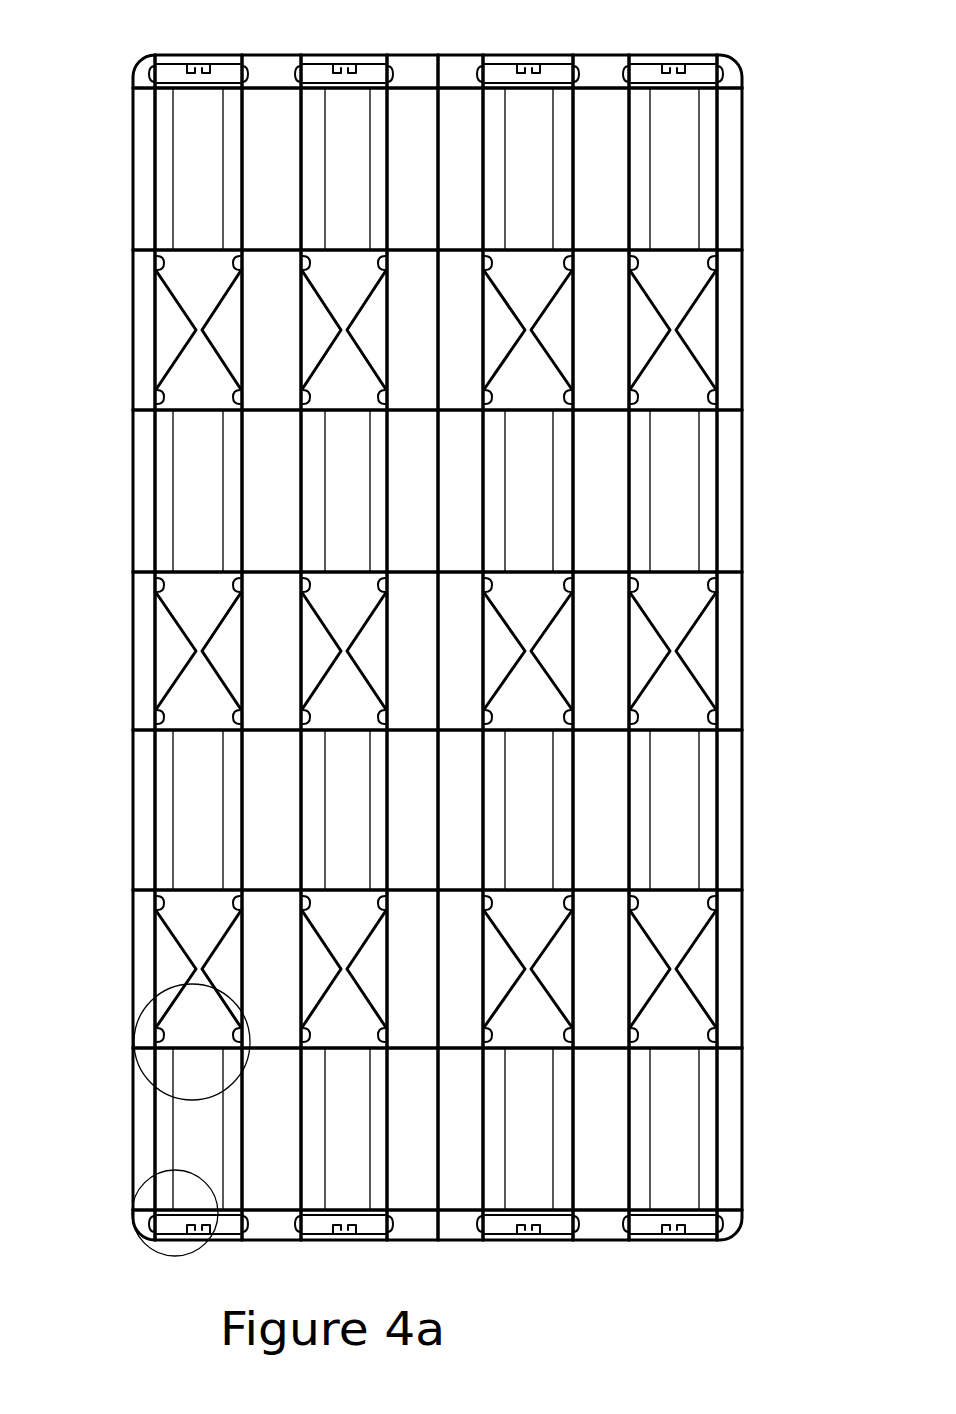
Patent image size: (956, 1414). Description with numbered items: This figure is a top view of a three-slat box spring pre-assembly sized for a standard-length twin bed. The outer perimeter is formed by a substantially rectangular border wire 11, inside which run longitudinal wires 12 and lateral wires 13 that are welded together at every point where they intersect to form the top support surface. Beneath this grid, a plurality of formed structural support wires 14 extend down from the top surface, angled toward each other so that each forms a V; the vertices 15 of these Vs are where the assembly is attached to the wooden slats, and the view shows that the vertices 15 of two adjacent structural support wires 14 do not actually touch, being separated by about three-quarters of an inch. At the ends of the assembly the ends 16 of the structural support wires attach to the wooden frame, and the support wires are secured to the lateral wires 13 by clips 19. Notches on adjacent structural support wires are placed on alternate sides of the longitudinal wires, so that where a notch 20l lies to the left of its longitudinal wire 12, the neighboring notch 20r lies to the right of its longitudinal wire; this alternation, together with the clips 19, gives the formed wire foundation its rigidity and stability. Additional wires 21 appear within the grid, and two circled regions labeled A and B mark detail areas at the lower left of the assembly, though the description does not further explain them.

The border wire 11 is at (133, 180).
The longitudinal wires 12 is at (578, 133).
The lateral wires 13 is at (680, 572).
The structural support wire 14 is at (185, 650).
The vertices 15 is at (680, 652).
The ends 16 is at (345, 66).
The clips 19 is at (155, 68).
The left notch 20l is at (295, 903).
The right notch 20r is at (402, 903).
The intermediate bars 21 is at (700, 183).
The detail circle A is at (160, 1250).
The detail circle B is at (143, 1082).